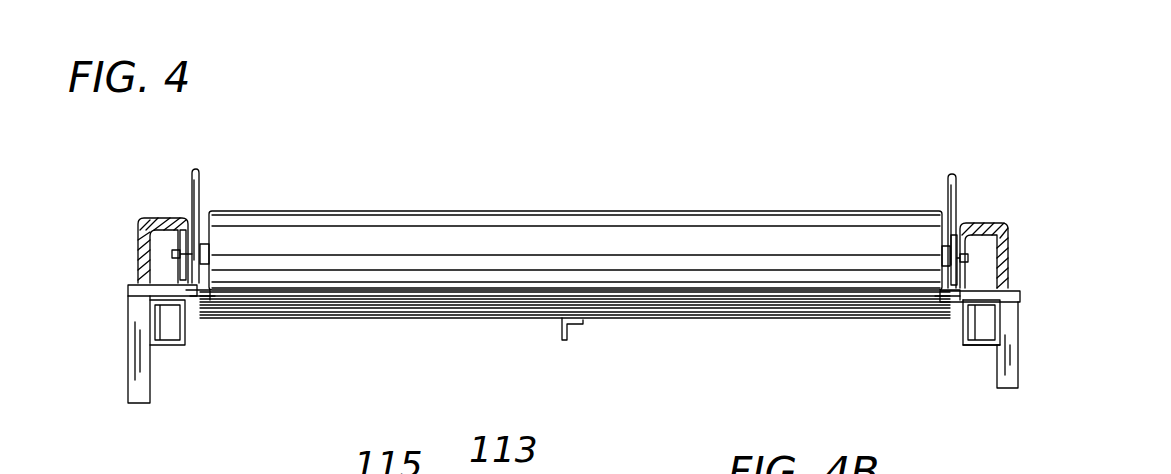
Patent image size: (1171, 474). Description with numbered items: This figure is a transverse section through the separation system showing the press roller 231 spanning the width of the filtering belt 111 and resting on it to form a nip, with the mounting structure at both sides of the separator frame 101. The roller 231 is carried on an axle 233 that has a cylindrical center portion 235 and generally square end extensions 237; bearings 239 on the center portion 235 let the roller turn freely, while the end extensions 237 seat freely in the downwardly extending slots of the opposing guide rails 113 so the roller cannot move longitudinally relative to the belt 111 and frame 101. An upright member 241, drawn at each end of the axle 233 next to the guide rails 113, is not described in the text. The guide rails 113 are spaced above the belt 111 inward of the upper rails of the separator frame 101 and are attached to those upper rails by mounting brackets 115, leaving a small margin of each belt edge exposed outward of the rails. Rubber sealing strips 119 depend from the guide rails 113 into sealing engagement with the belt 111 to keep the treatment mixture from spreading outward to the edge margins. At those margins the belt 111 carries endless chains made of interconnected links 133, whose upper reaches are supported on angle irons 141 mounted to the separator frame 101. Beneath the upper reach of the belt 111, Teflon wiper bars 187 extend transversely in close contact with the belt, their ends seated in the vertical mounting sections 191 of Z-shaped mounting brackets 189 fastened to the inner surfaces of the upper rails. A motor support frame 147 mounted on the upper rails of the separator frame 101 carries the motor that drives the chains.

The press roller 231 is at (497, 212).
The filtering belt 111 is at (315, 300).
The wiper bars 187 is at (468, 320).
The mounting brackets 115 is at (140, 232).
The guide rails 113 is at (164, 220).
The cylindrical center portion 235 is at (196, 225).
The lever 241 is at (192, 192).
The end extensions 237 is at (172, 254).
The bearings 239 is at (212, 226).
The links 133 is at (135, 292).
The motor support frame 147 is at (166, 348).
The mounting brackets 189 is at (177, 350).
The vertical mounting sections 191 is at (185, 338).
The rubber sealing strips 119 is at (198, 294).
The axle 233 is at (192, 298).
The separator frame 101 is at (1022, 320).
The angle irons 141 is at (1020, 336).